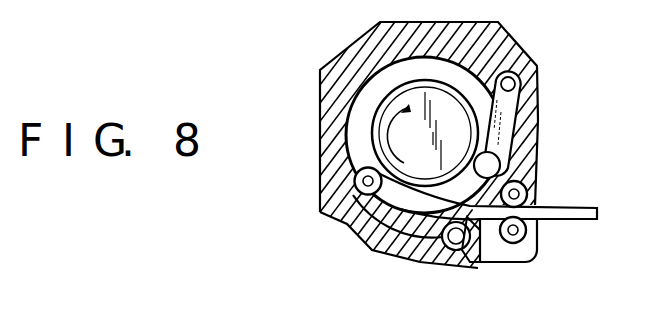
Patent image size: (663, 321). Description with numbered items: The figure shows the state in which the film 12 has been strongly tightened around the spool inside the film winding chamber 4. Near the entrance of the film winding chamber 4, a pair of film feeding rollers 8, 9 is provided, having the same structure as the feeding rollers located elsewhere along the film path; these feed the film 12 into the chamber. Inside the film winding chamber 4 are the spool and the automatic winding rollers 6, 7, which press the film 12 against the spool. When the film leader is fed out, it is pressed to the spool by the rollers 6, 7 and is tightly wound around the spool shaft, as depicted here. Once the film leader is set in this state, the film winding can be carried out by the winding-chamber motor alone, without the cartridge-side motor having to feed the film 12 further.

The film winding chamber 4 is at (373, 87).
The automatic winding roller 6 is at (356, 166).
The automatic winding roller 7 is at (515, 172).
The film feeding roller 8 is at (528, 194).
The film feeding roller 9 is at (510, 244).
The film 12 is at (577, 220).